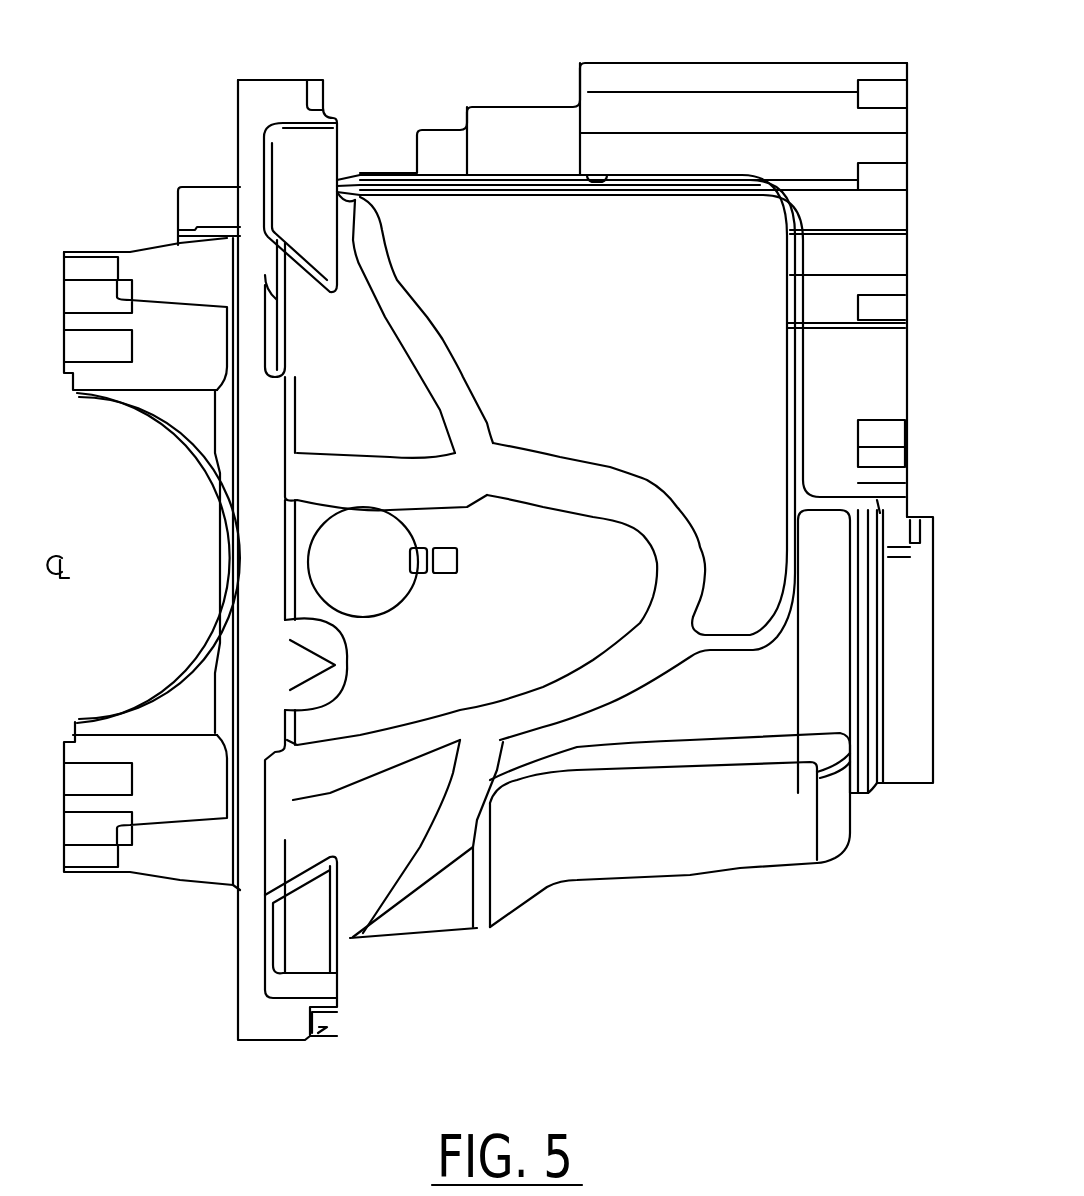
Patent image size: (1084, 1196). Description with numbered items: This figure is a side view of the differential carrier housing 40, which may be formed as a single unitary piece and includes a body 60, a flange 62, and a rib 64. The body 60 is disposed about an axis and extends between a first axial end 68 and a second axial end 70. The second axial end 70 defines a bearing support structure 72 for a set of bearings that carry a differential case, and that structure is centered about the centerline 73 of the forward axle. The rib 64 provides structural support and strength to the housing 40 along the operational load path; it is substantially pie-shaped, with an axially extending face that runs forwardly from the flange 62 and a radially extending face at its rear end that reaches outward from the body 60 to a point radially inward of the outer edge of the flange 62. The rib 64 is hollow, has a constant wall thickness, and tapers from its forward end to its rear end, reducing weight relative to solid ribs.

The differential carrier housing 40 is at (532, 78).
The body 60 is at (732, 72).
The flange 62 is at (273, 97).
The rib 64 is at (622, 568).
The first axial end 68 is at (926, 65).
The second axial end 70 is at (119, 205).
The bearing support structure 72 is at (188, 865).
The centerline 73 is at (71, 553).